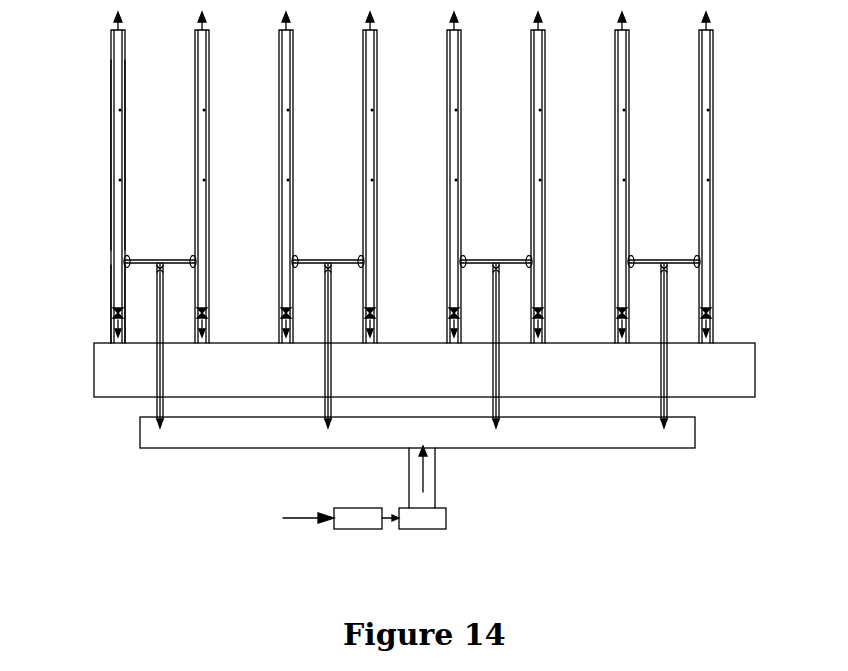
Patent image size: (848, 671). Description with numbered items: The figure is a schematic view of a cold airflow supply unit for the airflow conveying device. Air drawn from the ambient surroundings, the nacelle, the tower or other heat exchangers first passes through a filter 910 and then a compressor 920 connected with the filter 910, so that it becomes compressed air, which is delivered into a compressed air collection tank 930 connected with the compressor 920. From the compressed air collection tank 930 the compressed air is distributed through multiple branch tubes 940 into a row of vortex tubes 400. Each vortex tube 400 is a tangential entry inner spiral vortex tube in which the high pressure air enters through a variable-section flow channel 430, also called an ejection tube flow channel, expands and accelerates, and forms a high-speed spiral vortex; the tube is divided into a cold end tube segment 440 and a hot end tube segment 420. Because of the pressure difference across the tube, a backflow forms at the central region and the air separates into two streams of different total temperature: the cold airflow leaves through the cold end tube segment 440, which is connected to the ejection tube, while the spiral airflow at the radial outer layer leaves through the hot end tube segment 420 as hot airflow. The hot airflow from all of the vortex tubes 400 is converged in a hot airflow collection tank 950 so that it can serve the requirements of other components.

The vortex tube 400 is at (408, 220).
The cold end tube segment 440 is at (112, 207).
The variable-section flow channel 430 is at (128, 262).
The hot end tube segment 420 is at (112, 290).
The branch tube 940 is at (710, 313).
The hot airflow collection tank 950 is at (737, 378).
The compressed air collection tank 930 is at (578, 432).
The filter 910 is at (355, 530).
The compressor 920 is at (425, 530).